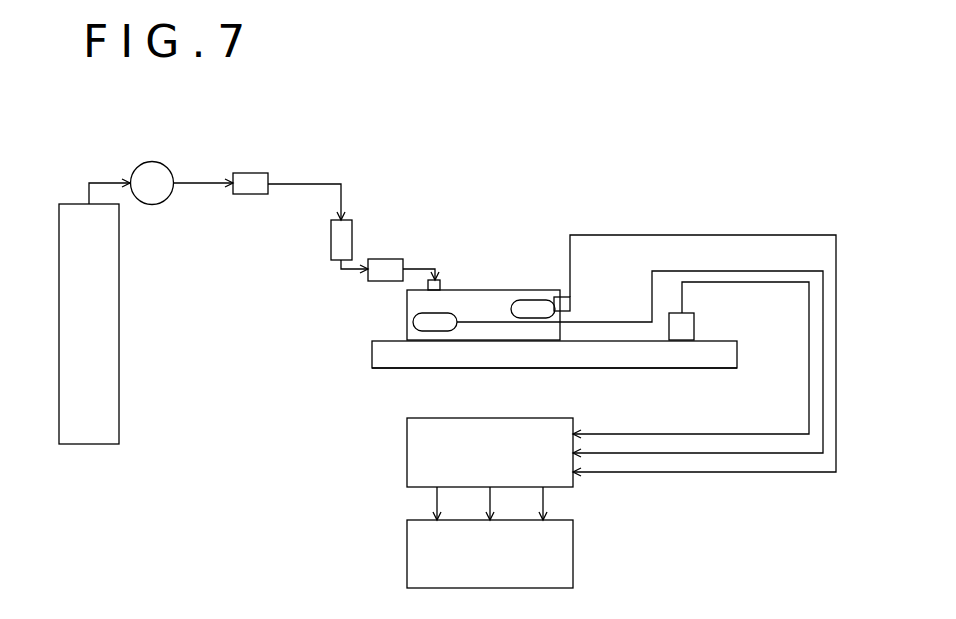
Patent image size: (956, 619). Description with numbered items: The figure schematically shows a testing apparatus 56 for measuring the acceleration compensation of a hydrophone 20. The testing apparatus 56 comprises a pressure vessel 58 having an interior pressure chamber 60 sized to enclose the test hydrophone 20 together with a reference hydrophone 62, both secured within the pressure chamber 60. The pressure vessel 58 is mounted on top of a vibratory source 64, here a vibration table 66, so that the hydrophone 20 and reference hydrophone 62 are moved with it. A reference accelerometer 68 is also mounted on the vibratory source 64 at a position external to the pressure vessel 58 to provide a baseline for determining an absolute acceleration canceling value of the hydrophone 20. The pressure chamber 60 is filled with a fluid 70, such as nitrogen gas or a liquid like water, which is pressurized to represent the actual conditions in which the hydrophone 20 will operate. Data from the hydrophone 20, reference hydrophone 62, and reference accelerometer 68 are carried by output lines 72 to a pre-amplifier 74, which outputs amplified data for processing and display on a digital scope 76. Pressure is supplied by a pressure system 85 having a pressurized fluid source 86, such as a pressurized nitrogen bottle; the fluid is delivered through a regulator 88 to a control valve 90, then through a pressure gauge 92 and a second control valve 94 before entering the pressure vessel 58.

The hydrophone 20 is at (443, 313).
The testing apparatus 56 is at (797, 183).
The pressure vessel 58 is at (537, 288).
The pressure chamber 60 is at (488, 313).
The reference hydrophone 62 is at (558, 298).
The vibratory source 64 is at (372, 357).
The vibration table 66 is at (662, 369).
The reference accelerometer 68 is at (695, 323).
The fluid 70 is at (417, 300).
The output lines 72 is at (837, 413).
The pre-amplifier 74 is at (406, 457).
The digital scope 76 is at (573, 557).
The pressure system 85 is at (420, 142).
The pressurized fluid source 86 is at (119, 345).
The regulator 88 is at (156, 157).
The control valve 90 is at (253, 172).
The pressure gauge 92 is at (353, 232).
The second control valve 94 is at (397, 258).